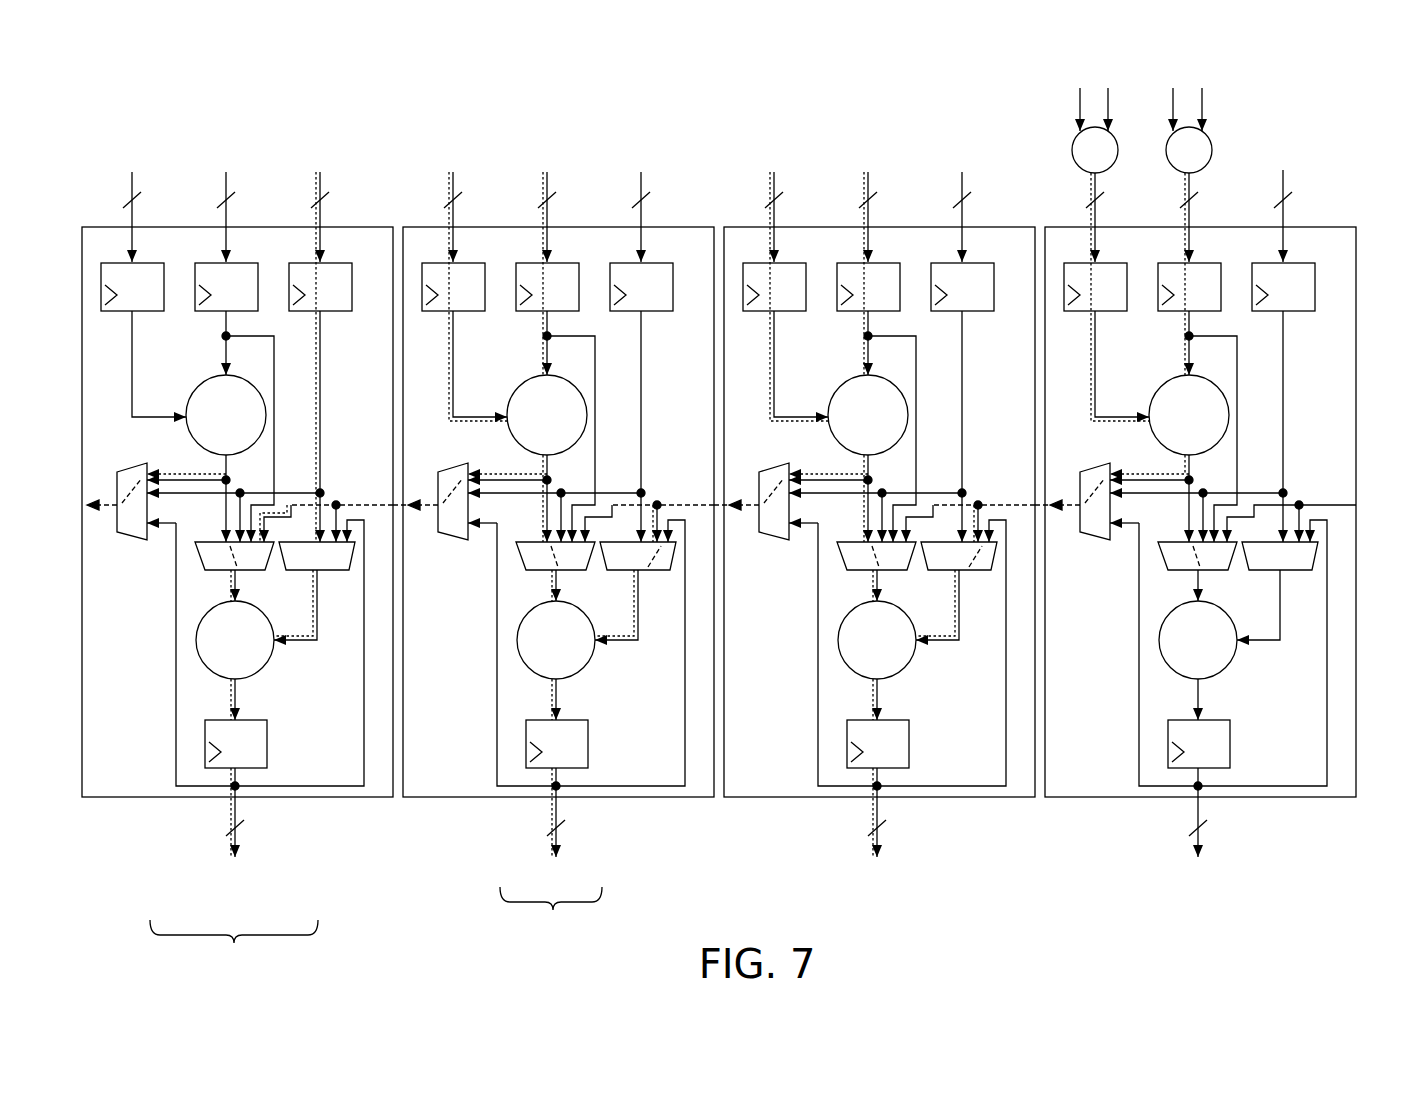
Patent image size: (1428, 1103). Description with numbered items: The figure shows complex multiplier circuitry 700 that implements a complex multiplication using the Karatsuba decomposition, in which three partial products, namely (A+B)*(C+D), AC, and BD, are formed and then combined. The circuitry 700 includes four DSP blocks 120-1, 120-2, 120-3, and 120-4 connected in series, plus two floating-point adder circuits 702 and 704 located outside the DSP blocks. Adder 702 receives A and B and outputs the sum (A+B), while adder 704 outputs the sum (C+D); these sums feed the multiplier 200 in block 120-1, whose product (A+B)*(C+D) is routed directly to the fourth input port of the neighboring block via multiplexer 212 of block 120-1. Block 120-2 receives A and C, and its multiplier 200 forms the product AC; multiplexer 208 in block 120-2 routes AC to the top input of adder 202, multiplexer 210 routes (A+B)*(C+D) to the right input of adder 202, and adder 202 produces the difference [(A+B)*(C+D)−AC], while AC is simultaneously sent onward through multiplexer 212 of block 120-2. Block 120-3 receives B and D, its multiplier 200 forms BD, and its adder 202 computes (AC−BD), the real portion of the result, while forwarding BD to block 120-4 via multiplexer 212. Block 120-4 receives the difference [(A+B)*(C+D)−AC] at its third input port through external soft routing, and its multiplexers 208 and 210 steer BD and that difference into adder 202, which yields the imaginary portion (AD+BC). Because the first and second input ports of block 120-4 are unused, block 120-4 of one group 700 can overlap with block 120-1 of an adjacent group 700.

The complex multiplier circuitry 700 is at (1332, 112).
The floating-point adder circuit 702 is at (1072, 150).
The floating-point adder circuit 704 is at (1212, 150).
The DSP block 120-1 is at (1195, 514).
The DSP block 120-2 is at (874, 532).
The DSP block 120-3 is at (553, 541).
The DSP block 120-4 is at (237, 543).
The multiplier 200 is at (537, 392).
The adder 202 is at (592, 640).
The multiplexer 208 is at (513, 563).
The multiplexer 210 is at (639, 588).
The multiplexer 212 is at (430, 474).